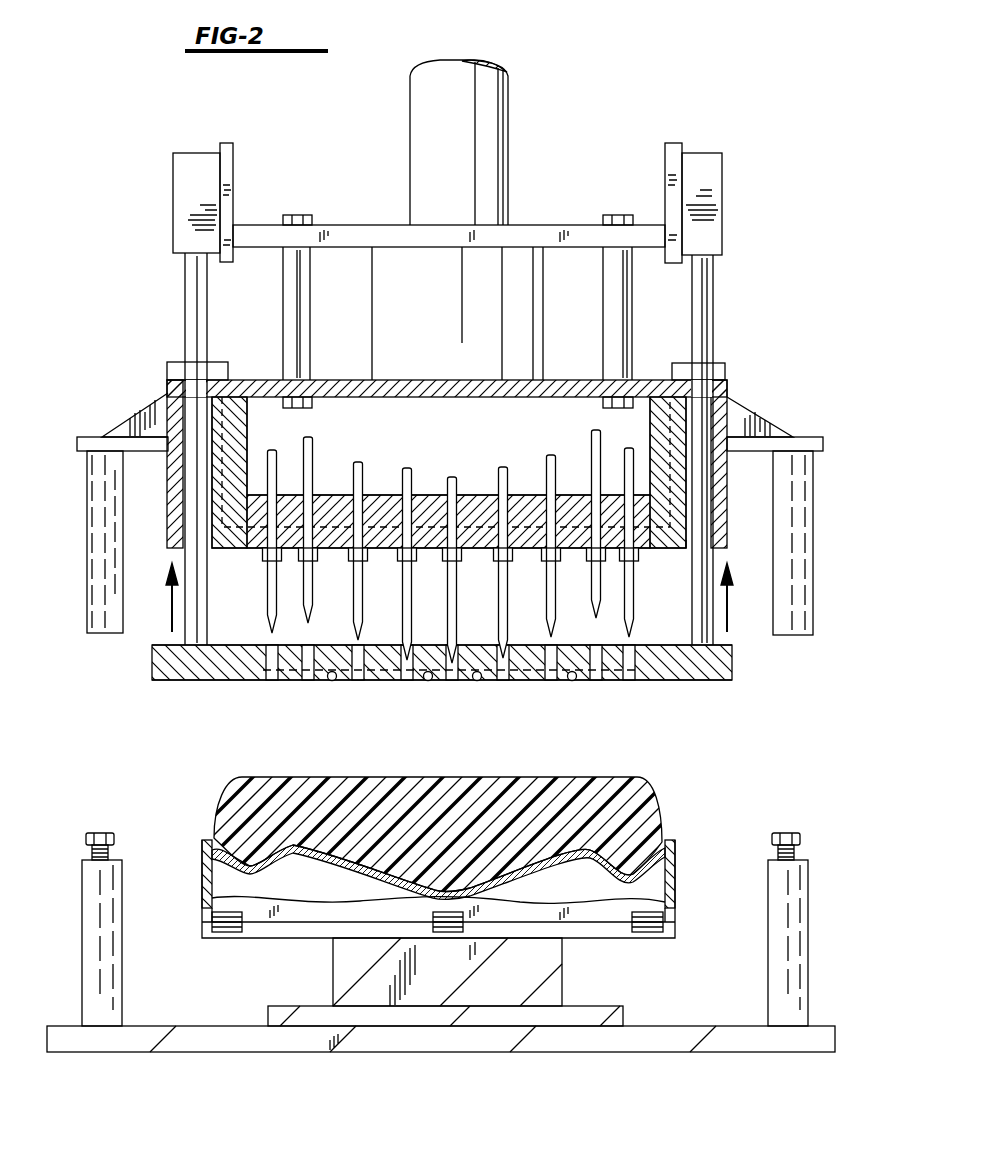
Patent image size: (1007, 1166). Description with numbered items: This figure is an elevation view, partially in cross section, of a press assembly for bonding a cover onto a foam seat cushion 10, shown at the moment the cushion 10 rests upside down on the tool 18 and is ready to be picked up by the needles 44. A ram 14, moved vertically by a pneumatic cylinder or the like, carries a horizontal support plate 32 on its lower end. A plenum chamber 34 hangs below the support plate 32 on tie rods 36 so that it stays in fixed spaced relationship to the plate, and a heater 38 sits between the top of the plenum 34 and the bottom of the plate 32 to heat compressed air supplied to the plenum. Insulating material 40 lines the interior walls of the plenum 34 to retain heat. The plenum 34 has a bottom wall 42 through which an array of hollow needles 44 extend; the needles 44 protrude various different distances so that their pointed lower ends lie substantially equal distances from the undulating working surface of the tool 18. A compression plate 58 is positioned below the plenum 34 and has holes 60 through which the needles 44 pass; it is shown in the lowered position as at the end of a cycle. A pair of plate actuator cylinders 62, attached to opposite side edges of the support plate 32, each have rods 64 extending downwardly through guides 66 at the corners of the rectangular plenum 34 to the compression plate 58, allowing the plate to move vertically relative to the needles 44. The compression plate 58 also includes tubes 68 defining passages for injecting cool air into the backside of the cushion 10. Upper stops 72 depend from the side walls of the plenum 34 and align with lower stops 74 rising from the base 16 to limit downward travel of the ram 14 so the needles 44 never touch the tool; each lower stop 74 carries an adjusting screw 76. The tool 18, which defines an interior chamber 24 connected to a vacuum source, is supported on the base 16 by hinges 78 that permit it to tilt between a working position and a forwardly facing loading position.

The foam seat cushion 10 is at (645, 812).
The ram 14 is at (492, 118).
The base 16 is at (832, 1040).
The tool 18 is at (212, 857).
The interior chamber 24 is at (670, 880).
The horizontal support plate 32 is at (570, 237).
The plenum chamber 34 is at (652, 383).
The tie rods 36 is at (283, 336).
The heater 38 is at (418, 263).
The insulating material 40 is at (430, 503).
The bottom wall 42 is at (672, 550).
The needles 44 is at (303, 626).
The compression plate 58 is at (498, 697).
The holes 60 is at (412, 682).
The plate actuator cylinders 62 is at (182, 212).
The rods 64 is at (192, 322).
The guides 66 is at (168, 420).
The tubes 68 is at (333, 682).
The upper stops 72 is at (108, 515).
The lower stops 74 is at (82, 925).
The adjusting screw 76 is at (88, 840).
The hinges 78 is at (232, 935).